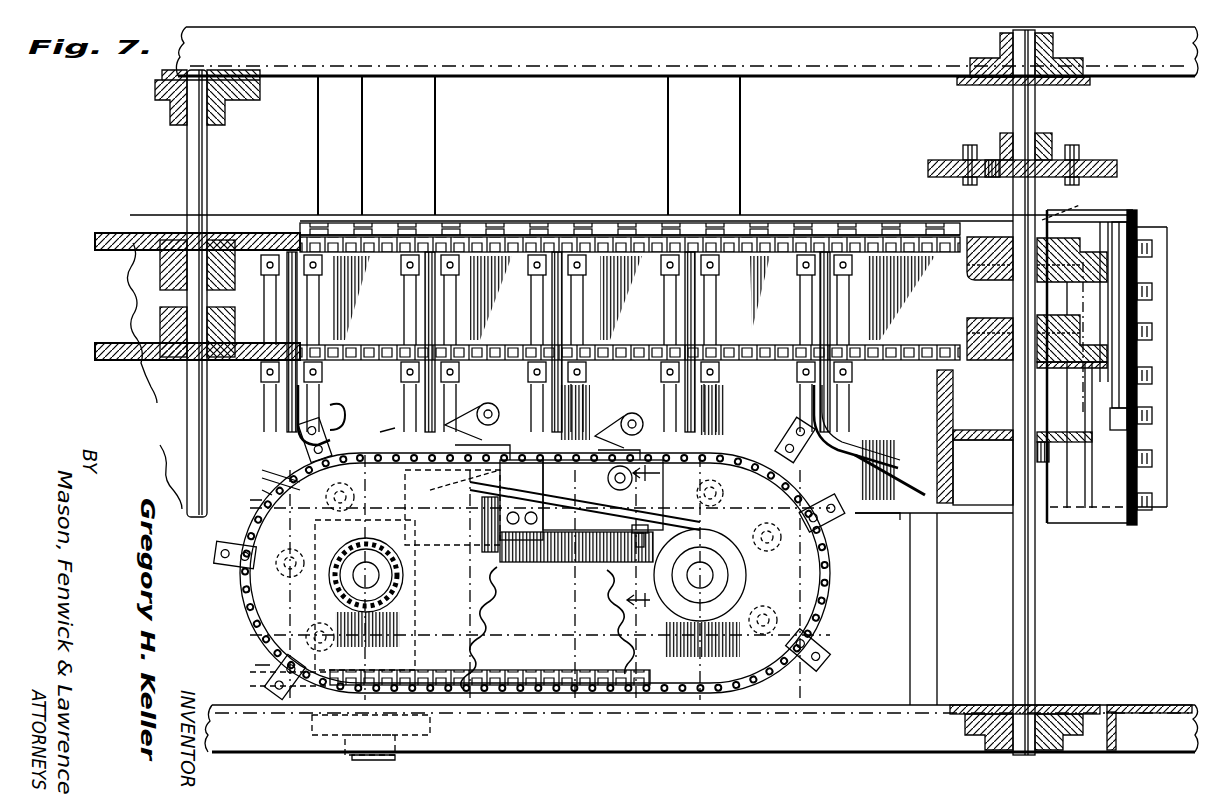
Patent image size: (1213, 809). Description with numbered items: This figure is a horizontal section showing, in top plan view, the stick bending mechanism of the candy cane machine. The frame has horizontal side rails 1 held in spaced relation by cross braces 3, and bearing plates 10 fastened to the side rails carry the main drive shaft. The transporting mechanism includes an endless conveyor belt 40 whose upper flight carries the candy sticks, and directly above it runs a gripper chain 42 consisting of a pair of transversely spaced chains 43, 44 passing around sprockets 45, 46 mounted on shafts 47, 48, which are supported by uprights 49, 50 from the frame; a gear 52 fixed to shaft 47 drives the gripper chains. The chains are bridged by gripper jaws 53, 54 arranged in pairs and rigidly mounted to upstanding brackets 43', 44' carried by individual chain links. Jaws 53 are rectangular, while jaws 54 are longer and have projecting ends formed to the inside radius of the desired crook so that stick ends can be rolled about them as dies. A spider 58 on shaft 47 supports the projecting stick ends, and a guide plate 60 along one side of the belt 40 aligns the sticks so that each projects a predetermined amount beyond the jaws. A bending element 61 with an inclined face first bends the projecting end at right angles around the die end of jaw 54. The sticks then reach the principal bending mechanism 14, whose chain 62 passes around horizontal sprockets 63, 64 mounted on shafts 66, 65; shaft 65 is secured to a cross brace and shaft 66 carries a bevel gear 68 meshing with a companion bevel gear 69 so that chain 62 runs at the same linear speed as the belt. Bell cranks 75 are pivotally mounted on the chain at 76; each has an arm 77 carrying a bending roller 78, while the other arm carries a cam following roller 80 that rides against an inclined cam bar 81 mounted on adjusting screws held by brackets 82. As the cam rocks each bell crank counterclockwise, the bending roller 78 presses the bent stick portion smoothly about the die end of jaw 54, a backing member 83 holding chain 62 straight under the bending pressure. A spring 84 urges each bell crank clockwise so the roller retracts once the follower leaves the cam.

The side rail 1 is at (870, 55).
The cross brace 3 is at (316, 160).
The bearing plate 10 is at (645, 543).
The bending mechanism 14 is at (519, 646).
The endless conveyor belt 40 is at (909, 411).
The gripper chain 42 is at (865, 345).
The chain 43 is at (527, 343).
The upstanding bracket 43' is at (547, 342).
The chain 44 is at (527, 334).
The upstanding bracket 44' is at (556, 397).
The sprocket 45 is at (985, 318).
The sprocket 46 is at (133, 262).
The shaft 47 is at (1012, 105).
The shaft 48 is at (186, 152).
The upright 49 is at (1078, 86).
The upright 50 is at (240, 77).
The gear 52 is at (1100, 158).
The gripper jaw 53 is at (272, 413).
The gripper jaw 54 is at (186, 425).
The spider 58 is at (975, 445).
The guide plate 60 is at (620, 215).
The bending element 61 is at (876, 500).
The chain 62 is at (240, 592).
The sprocket 63 is at (497, 567).
The sprocket 64 is at (610, 630).
The shaft 65 is at (714, 573).
The shaft 66 is at (495, 560).
The bevel gear 68 is at (390, 550).
The bevel gear 69 is at (352, 545).
The bell crank 75 is at (470, 412).
The pivot 76 is at (470, 440).
The arm 77 is at (252, 500).
The bending roller 78 is at (265, 492).
The cam following roller 80 is at (375, 505).
The cam bar 81 is at (565, 500).
The bracket 82 is at (480, 540).
The backing member 83 is at (608, 478).
The spring 84 is at (305, 483).